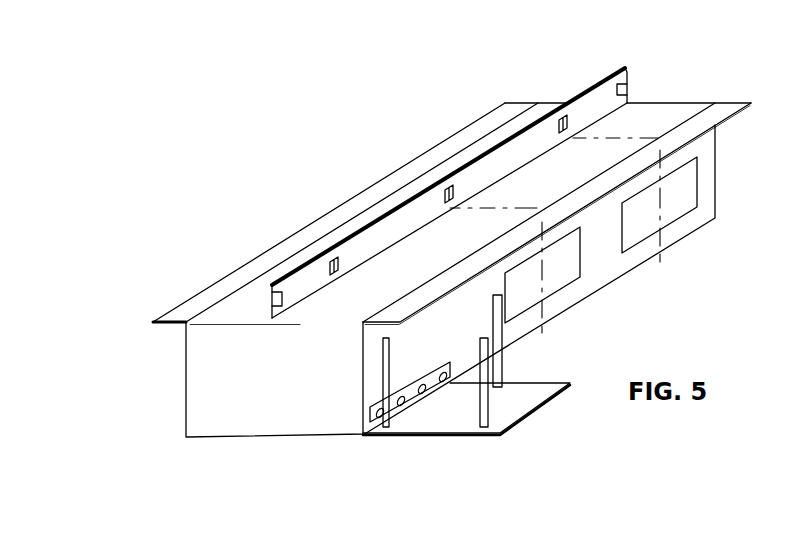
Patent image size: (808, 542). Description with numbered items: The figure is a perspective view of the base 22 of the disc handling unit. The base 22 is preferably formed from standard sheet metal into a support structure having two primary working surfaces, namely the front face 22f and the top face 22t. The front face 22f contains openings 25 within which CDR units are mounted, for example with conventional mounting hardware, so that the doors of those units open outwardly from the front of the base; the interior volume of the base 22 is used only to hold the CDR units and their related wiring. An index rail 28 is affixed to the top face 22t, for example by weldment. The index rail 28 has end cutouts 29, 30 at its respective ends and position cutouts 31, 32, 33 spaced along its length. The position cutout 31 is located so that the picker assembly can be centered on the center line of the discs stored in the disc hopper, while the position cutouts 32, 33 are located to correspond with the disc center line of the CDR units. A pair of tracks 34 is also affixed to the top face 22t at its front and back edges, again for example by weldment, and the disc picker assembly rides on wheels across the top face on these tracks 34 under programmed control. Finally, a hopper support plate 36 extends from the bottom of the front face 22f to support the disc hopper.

The base 22 is at (186, 375).
The top face 22t is at (581, 184).
The front face 22f is at (436, 362).
The openings 25 is at (680, 208).
The index rail 28 is at (589, 86).
The end cutout 29 is at (272, 298).
The end cutout 30 is at (627, 88).
The position cutout 31 is at (332, 262).
The position cutout 32 is at (449, 186).
The position cutout 33 is at (562, 118).
The tracks 34 is at (176, 312).
The hopper support plate 36 is at (466, 426).